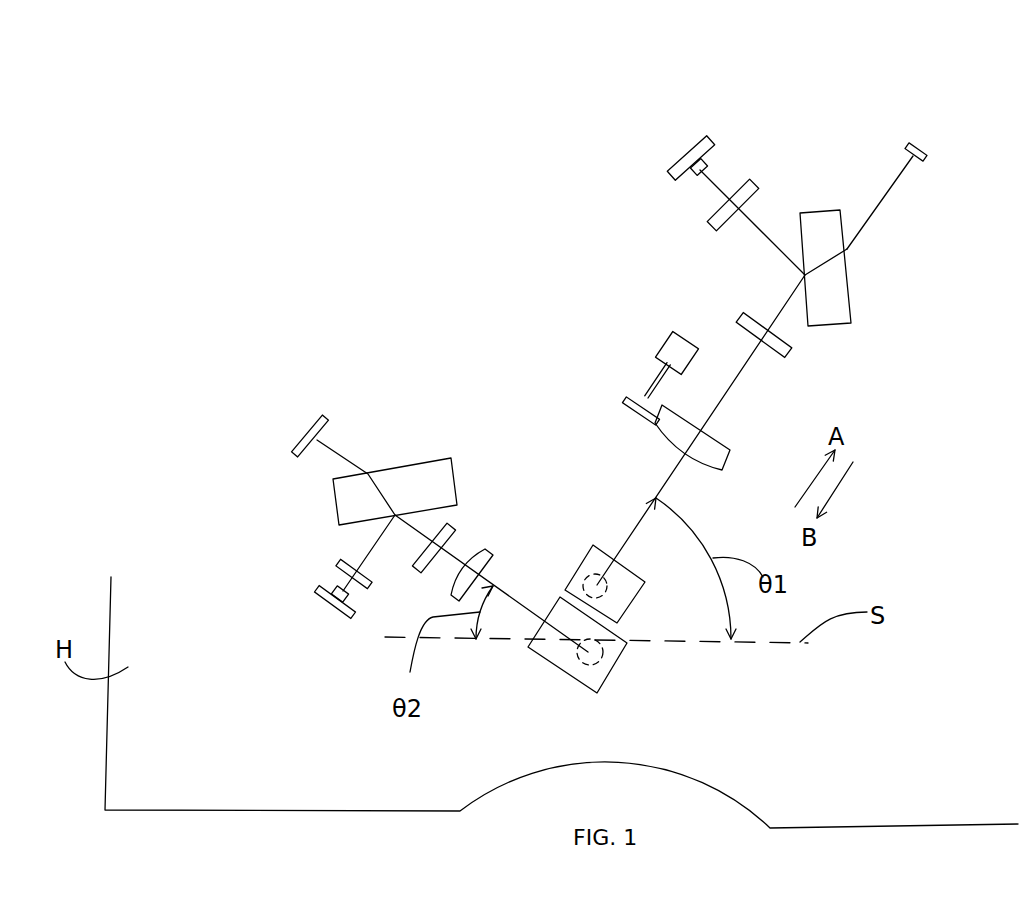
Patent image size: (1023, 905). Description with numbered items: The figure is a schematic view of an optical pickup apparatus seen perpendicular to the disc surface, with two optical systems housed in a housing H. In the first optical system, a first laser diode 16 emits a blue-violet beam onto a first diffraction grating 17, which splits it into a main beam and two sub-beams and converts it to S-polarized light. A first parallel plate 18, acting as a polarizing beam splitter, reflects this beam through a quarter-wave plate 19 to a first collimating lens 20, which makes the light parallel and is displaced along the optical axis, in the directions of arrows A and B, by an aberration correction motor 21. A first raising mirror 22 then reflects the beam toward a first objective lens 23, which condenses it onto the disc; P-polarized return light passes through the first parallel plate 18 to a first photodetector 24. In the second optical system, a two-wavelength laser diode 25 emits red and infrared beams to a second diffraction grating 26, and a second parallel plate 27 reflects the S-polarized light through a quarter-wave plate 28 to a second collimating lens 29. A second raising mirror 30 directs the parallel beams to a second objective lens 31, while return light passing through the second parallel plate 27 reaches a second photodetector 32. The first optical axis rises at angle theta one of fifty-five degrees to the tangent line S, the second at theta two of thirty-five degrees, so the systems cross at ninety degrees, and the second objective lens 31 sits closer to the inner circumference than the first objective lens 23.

The first laser diode 16 is at (710, 138).
The first diffraction grating 17 is at (757, 182).
The first parallel plate 18 is at (837, 300).
The quarter-wave plate 19 is at (790, 356).
The first collimating lens 20 is at (727, 463).
The aberration correction motor 21 is at (668, 350).
The first raising mirror 22 is at (628, 578).
The first objective lens 23 is at (577, 573).
The first photodetector 24 is at (925, 150).
The two-wavelength laser diode 25 is at (332, 617).
The second diffraction grating 26 is at (337, 564).
The second parallel plate 27 is at (421, 480).
The quarter-wave plate 28 is at (413, 565).
The second collimating lens 29 is at (491, 556).
The second raising mirror 30 is at (552, 655).
The second objective lens 31 is at (613, 670).
The second photodetector 32 is at (323, 413).